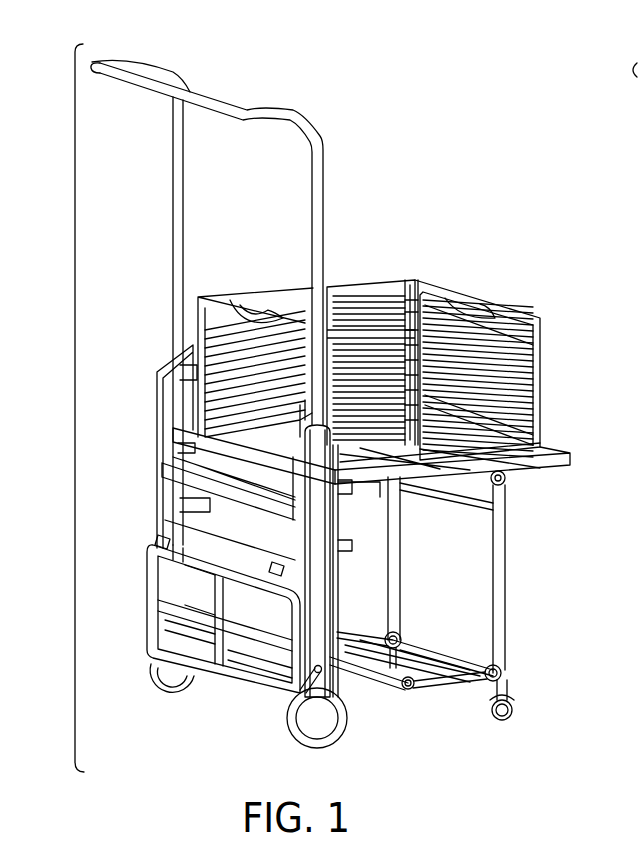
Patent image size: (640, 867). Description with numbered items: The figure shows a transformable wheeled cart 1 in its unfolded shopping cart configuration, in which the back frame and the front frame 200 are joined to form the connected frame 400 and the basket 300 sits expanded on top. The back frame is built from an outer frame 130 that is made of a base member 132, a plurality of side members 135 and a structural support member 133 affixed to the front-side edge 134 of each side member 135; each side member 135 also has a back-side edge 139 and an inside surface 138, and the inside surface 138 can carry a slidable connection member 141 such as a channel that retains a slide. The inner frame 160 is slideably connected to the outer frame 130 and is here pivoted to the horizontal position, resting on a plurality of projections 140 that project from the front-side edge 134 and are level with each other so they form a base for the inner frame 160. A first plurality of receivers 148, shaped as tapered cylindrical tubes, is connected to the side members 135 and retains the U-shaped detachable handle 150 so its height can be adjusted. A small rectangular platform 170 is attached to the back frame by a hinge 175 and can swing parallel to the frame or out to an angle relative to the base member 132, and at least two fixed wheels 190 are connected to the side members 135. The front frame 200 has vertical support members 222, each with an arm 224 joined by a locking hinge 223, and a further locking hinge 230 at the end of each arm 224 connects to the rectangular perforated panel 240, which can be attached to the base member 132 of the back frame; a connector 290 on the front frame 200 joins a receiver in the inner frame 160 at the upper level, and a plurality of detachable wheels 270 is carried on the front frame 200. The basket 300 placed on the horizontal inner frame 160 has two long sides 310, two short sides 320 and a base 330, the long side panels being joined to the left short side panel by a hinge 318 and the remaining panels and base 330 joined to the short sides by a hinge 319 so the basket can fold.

The transformable wheeled cart 1 is at (458, 118).
The connected frame 400 is at (75, 406).
The detachable handle 150 is at (174, 216).
The first plurality of receivers 148 is at (318, 606).
The side members 135 is at (168, 365).
The front-side edge 134 is at (337, 512).
The projections 140 is at (180, 370).
The outer frame 130 is at (361, 463).
The inside surface 138 is at (228, 491).
The hinge 319 is at (200, 442).
The structural support member 133 is at (162, 480).
The back-side edge 139 is at (157, 498).
The slidable connection member 141 is at (165, 520).
The small rectangular platform 170 is at (196, 634).
The base member 132 is at (247, 662).
The fixed wheels 190 is at (167, 687).
The hinge 175 is at (300, 687).
The short sides 320 is at (223, 302).
The long sides 310 is at (247, 287).
The hinge 318 is at (345, 290).
The basket 300 is at (468, 292).
The inner frame 160 is at (572, 457).
The connector 290 is at (507, 481).
The front frame 200 is at (505, 583).
The vertical support members 222 is at (397, 537).
The base 330 is at (445, 496).
The locking hinge 223 is at (402, 633).
The rectangular perforated panel 240 is at (363, 662).
The locking hinge 230 is at (410, 690).
The arm 224 is at (452, 688).
The detachable wheels 270 is at (510, 713).